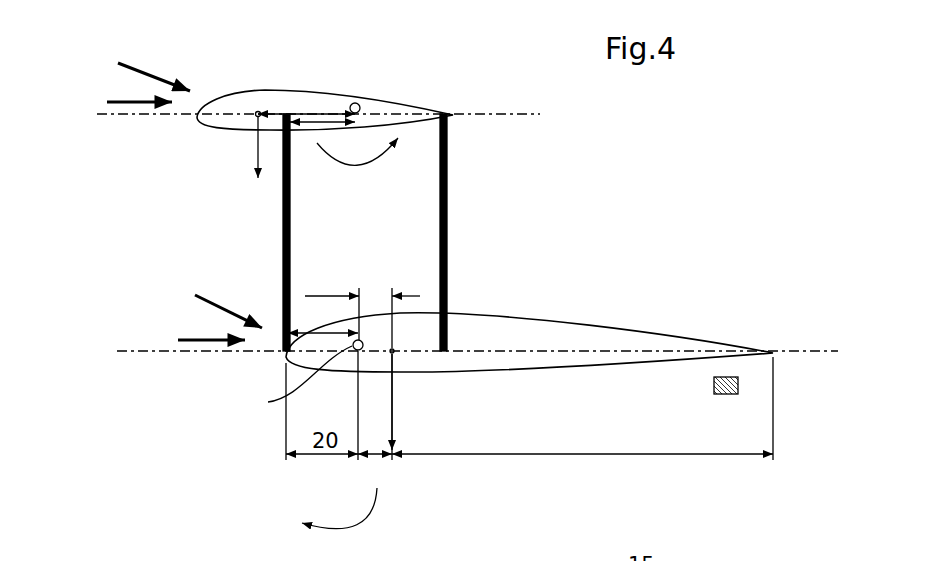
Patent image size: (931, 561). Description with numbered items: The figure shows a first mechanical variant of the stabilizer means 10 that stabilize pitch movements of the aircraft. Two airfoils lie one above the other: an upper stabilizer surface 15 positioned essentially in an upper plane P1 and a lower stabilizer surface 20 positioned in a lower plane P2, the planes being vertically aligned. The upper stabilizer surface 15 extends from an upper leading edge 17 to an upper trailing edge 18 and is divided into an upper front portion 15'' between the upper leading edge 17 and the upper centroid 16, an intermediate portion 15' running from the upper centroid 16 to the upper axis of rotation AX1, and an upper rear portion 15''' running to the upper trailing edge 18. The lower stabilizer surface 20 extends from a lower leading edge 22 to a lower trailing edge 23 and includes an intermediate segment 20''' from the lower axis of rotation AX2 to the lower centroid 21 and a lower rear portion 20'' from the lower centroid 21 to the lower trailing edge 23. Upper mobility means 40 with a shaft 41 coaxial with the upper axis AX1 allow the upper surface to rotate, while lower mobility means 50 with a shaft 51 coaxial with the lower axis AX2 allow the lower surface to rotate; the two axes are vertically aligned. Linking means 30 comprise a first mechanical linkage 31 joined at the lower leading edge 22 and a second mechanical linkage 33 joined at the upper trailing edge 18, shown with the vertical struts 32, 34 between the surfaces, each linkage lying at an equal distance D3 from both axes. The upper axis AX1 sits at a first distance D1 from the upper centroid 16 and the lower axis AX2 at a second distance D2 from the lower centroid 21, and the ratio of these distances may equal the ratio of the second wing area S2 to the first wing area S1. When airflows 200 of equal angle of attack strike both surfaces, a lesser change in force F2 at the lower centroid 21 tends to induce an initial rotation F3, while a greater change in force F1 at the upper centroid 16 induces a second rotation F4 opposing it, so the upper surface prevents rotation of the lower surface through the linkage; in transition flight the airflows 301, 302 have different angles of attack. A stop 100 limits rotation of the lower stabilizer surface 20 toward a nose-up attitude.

The stabilizer means 10 is at (685, 183).
The upper stabilizer surface 15 is at (353, 99).
The intermediate portion 15' is at (281, 52).
The upper front portion 15'' is at (469, 60).
The upper rear portion 15''' is at (197, 53).
The upper centroid 16 is at (257, 112).
The upper leading edge 17 is at (196, 119).
The upper trailing edge 18 is at (455, 117).
The lower stabilizer surface 20 is at (529, 364).
The lower rear portion 20'' is at (587, 440).
The intermediate segment 20''' is at (380, 470).
The lower centroid 21 is at (395, 352).
The lower leading edge 22 is at (288, 357).
The lower trailing edge 23 is at (774, 354).
The linking means 30 is at (510, 184).
The first mechanical linkage 31 is at (225, 245).
The front strut 32 is at (290, 214).
The second mechanical linkage 33 is at (475, 270).
The rear strut 34 is at (447, 213).
The upper mobility means 40 is at (355, 101).
The shaft 41 is at (361, 106).
The lower mobility means 50 is at (350, 358).
The shaft 51 is at (298, 382).
The stop 100 is at (728, 388).
The airflows 200 is at (176, 209).
The airflow 301 is at (228, 305).
The airflow 302 is at (154, 70).
The first wing area S1 is at (310, 87).
The second wing area S2 is at (565, 310).
The upper axis of rotation AX1 is at (359, 103).
The lower axis of rotation AX2 is at (363, 344).
The first distance D1 is at (306, 105).
The second distance D2 is at (362, 310).
The distance D3 is at (323, 227).
The greater change in force F1 is at (243, 147).
The lesser change in force F2 is at (407, 402).
The initial rotation F3 is at (342, 520).
The second rotation F4 is at (359, 161).
The upper plane P1 is at (97, 115).
The lower plane P2 is at (118, 351).